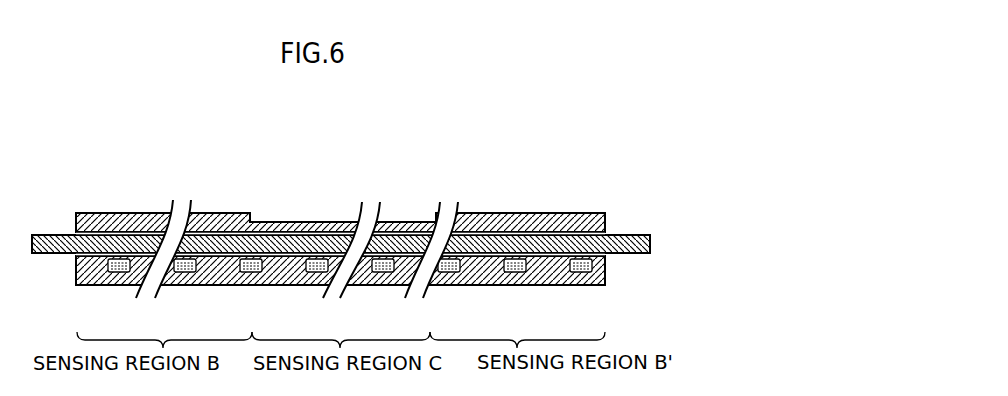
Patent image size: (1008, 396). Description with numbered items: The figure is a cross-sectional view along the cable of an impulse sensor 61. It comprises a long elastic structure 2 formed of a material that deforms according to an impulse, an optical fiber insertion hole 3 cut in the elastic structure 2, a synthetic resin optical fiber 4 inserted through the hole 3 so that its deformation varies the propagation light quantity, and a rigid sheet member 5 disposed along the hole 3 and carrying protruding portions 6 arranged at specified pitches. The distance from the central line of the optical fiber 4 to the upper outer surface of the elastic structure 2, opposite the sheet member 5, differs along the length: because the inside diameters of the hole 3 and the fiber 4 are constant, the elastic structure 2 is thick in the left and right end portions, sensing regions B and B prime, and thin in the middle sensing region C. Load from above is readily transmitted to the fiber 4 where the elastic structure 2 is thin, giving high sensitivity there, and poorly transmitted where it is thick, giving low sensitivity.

The elastic structure 2 is at (563, 213).
The optical fiber insertion hole 3 is at (523, 232).
The synthetic resin optical fiber 4 is at (503, 233).
The sheet member 5 is at (410, 295).
The protruding portion 6 is at (505, 266).
The impulse sensor 61 is at (436, 230).